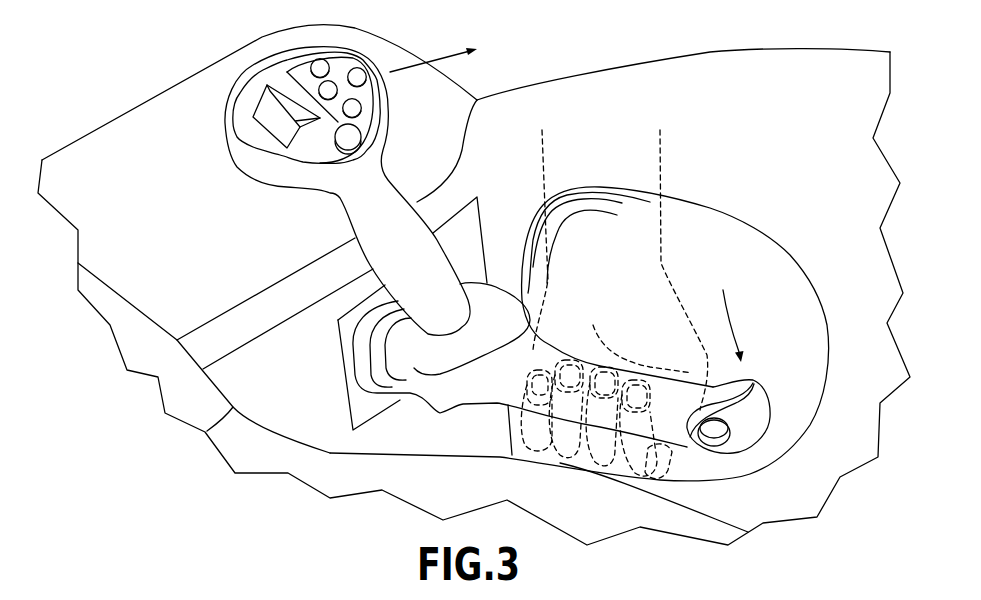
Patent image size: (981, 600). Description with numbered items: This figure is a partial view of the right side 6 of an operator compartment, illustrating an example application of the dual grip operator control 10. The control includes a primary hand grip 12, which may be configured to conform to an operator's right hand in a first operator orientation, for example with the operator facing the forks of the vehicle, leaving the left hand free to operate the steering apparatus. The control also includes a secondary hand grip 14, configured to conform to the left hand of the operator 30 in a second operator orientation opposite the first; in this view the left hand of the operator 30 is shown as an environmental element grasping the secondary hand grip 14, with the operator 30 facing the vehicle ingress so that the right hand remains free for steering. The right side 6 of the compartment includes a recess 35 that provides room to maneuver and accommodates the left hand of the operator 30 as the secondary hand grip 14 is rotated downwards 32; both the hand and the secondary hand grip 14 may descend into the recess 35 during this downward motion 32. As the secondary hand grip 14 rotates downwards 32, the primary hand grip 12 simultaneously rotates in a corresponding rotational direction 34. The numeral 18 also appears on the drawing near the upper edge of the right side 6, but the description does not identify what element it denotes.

The right side 6 is at (750, 77).
The dual grip operator control 10 is at (567, 320).
The primary hand grip 12 is at (345, 221).
The secondary hand grip 14 is at (597, 430).
The upper panel edge 18 is at (683, 50).
The operator 30 is at (661, 147).
The downward motion 32 is at (735, 321).
The rotational direction 34 is at (443, 54).
The recess 35 is at (730, 465).